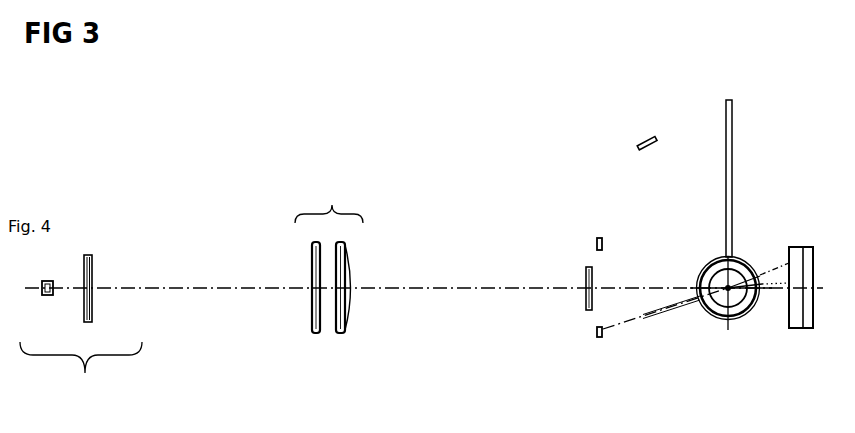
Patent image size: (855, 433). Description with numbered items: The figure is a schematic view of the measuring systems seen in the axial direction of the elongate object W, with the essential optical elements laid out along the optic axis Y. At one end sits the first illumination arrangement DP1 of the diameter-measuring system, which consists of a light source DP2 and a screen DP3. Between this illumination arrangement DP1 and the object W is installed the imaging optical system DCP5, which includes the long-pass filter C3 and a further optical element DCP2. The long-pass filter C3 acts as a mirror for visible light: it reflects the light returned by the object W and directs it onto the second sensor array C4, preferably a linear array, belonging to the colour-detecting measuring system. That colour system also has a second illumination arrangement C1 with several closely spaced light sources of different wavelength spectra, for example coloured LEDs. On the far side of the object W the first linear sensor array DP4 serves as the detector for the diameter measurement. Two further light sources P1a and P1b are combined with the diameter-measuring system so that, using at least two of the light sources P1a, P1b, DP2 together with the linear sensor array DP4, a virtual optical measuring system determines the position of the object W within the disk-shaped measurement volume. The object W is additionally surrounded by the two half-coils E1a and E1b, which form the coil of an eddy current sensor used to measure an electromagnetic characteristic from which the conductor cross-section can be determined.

The first illumination arrangement DP1 is at (135, 268).
The light source DP2 is at (47, 207).
The screen DP3 is at (169, 220).
The optic axis Y is at (424, 351).
The imaging optical system DCP5 is at (350, 295).
The long-pass filter C3 is at (285, 329).
The lens element DCP2 is at (393, 329).
The second illumination arrangement C1 is at (567, 106).
The further light source P1b is at (532, 181).
The second sensor array C4 is at (535, 236).
The further light source P1a is at (620, 352).
The half-coil E1a is at (675, 356).
The half-coil E1b is at (671, 309).
The object W is at (752, 215).
The linear sensor array DP4 is at (774, 332).